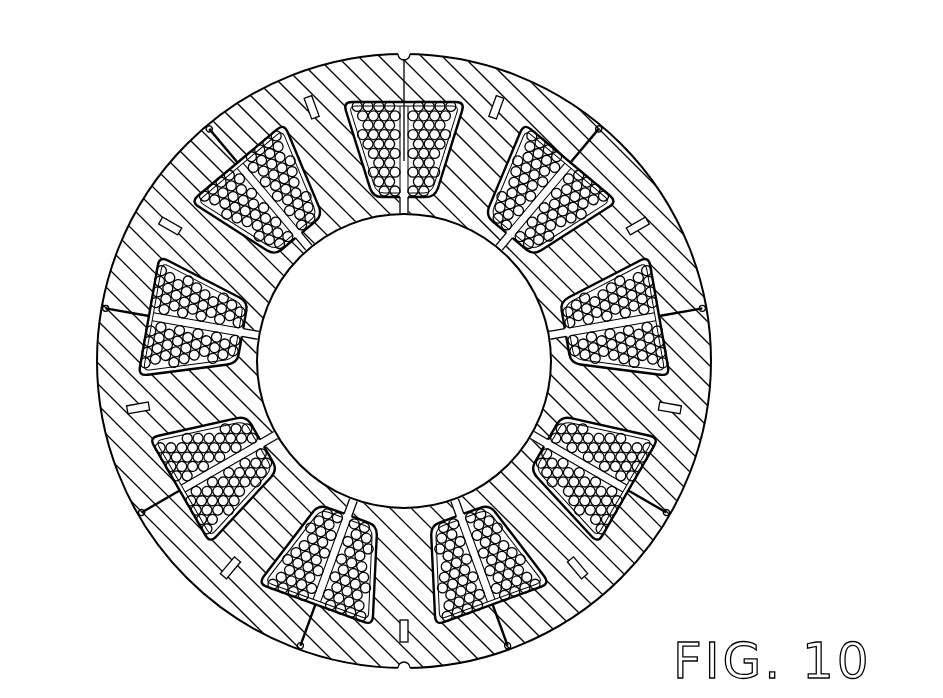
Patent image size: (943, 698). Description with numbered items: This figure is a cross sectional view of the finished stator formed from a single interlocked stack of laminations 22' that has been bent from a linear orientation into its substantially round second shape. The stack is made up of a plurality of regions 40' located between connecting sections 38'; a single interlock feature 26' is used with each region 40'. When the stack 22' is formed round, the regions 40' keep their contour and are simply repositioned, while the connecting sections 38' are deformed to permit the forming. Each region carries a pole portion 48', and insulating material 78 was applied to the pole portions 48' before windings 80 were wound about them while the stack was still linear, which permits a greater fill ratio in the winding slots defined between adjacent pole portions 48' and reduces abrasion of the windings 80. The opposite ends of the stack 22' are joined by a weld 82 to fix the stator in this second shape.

The interlocked stack of laminations 22' is at (423, 361).
The interlock feature 26' is at (358, 335).
The connecting sections 38' is at (367, 369).
The regions 40' is at (471, 349).
The pole portions 48' is at (398, 360).
The insulating material 78 is at (660, 300).
The windings 80 is at (700, 307).
The weld 82 is at (404, 52).